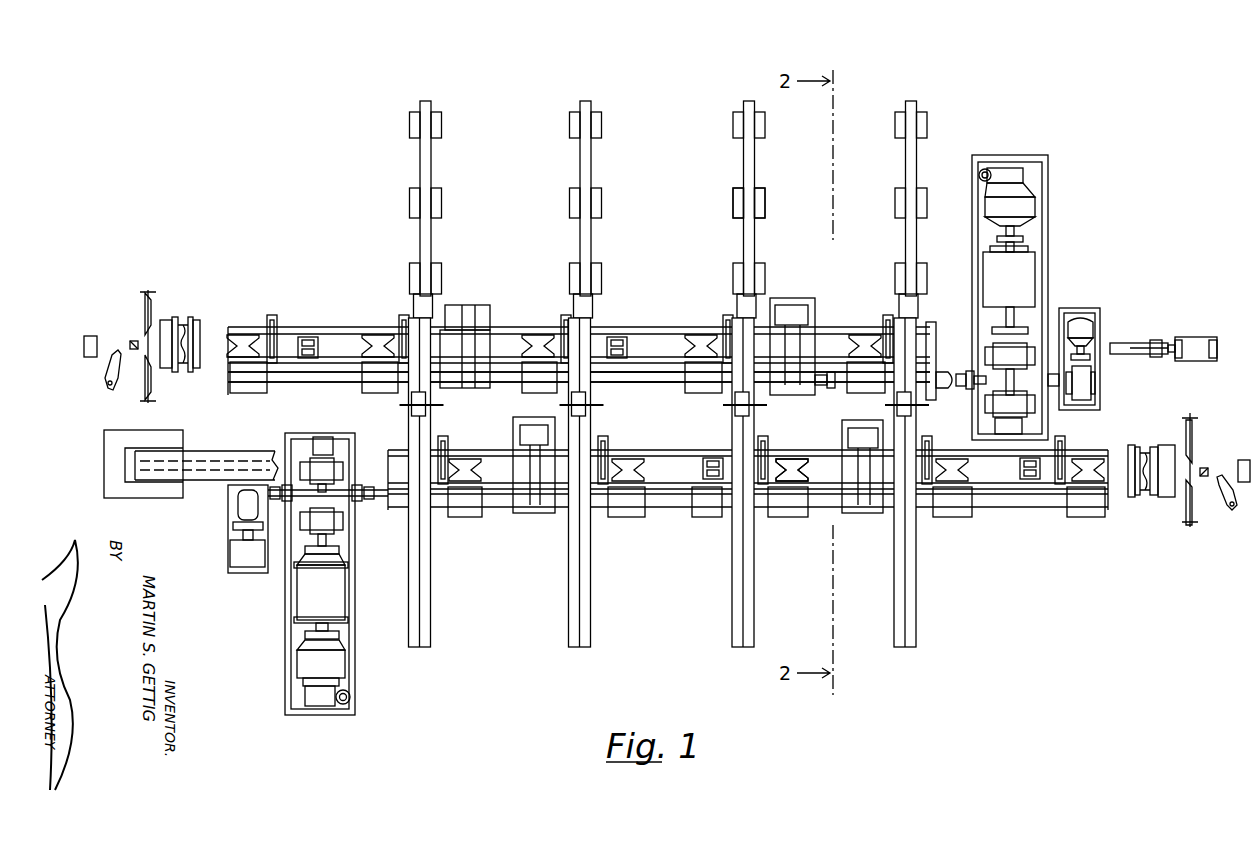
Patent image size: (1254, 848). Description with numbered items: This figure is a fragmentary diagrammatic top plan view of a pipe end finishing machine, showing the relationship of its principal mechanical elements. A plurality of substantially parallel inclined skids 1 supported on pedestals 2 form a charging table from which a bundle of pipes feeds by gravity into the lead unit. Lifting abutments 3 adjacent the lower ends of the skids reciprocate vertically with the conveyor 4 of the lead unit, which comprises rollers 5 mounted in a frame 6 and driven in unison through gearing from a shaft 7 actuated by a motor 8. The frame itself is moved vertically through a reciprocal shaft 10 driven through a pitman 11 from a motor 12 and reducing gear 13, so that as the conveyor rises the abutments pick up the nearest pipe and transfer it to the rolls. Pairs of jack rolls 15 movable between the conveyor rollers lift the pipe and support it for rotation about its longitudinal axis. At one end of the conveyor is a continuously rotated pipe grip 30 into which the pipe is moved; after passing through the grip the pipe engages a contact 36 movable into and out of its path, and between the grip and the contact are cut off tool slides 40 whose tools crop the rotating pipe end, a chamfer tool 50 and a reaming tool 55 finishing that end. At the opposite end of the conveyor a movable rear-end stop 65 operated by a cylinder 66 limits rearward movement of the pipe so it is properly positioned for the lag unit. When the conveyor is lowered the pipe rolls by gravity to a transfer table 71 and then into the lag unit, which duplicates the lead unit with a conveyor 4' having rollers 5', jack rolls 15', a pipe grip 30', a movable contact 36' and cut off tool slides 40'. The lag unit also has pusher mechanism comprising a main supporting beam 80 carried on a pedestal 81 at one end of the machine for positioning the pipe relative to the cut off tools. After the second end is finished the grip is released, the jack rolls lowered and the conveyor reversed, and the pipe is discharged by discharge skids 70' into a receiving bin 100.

The inclined skids 1 is at (752, 156).
The pedestals 2 is at (762, 208).
The lifting abutments 3 is at (568, 330).
The conveyor 4 is at (686, 323).
The conveyor 4' is at (950, 446).
The rollers 5 is at (525, 312).
The rollers 5' is at (802, 452).
The frame 6 is at (343, 356).
The shaft 7 is at (305, 377).
The motor 8 is at (1100, 316).
The reciprocal shaft 10 is at (626, 372).
The pitman 11 is at (978, 368).
The motor 12 is at (1015, 198).
The reducing gear 13 is at (1009, 340).
The jack rolls 15 is at (291, 323).
The jack rolls 15' is at (685, 502).
The pipe grip 30 is at (207, 330).
The pipe grip 30' is at (1126, 499).
The contact 36 is at (68, 333).
The movable contact 36' is at (1225, 458).
The cut off tool slides 40 is at (164, 334).
The cut off tool slides 40' is at (1206, 480).
The chamfer tool 50 is at (131, 341).
The reaming tool 55 is at (108, 366).
The rear-end stop 65 is at (1122, 345).
The cylinder 66 is at (1195, 357).
The discharge skids 70' is at (587, 465).
The transfer table 71 is at (408, 408).
The main supporting beam 80 is at (222, 455).
The pedestal 81 is at (112, 462).
The receiving bin 100 is at (578, 575).